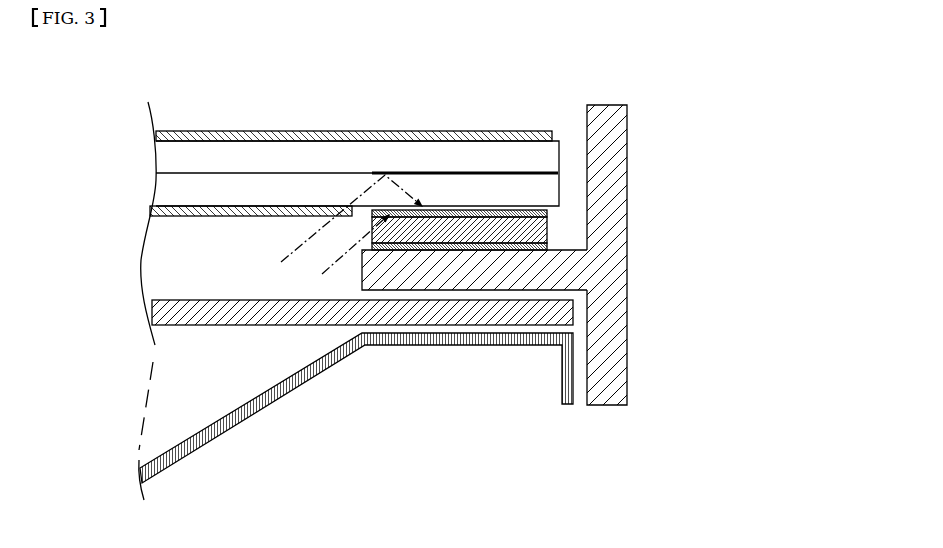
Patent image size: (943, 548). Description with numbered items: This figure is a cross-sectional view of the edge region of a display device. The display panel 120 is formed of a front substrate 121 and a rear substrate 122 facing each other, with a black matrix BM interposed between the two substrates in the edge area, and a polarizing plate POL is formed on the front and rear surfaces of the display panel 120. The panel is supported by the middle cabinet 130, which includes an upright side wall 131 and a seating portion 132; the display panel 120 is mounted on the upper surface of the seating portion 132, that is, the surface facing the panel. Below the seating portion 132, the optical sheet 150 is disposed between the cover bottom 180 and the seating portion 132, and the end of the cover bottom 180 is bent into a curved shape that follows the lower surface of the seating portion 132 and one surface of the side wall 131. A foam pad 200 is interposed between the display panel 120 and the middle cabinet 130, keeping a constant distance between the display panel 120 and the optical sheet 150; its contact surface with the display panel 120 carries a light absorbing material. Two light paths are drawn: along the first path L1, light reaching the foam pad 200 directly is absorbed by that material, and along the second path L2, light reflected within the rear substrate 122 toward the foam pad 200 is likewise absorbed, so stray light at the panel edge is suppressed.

The display panel 120 is at (300, 150).
The front substrate 121 is at (157, 158).
The rear substrate 122 is at (155, 186).
The polarizing plate POL is at (155, 135).
The black matrix BM is at (407, 172).
The middle cabinet 130 is at (572, 280).
The side wall 131 is at (617, 186).
The seating portion 132 is at (505, 277).
The optical sheet 150 is at (150, 313).
The cover bottom 180 is at (566, 406).
The foam pad 200 is at (560, 228).
The first path L1 is at (345, 253).
The second path L2 is at (341, 229).